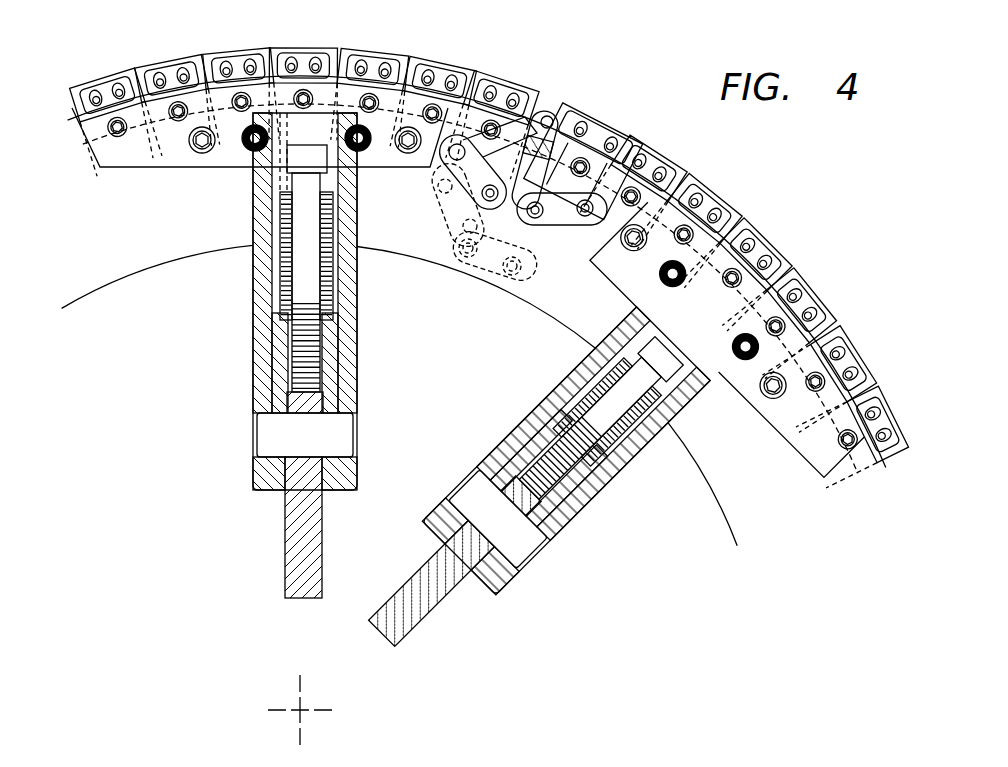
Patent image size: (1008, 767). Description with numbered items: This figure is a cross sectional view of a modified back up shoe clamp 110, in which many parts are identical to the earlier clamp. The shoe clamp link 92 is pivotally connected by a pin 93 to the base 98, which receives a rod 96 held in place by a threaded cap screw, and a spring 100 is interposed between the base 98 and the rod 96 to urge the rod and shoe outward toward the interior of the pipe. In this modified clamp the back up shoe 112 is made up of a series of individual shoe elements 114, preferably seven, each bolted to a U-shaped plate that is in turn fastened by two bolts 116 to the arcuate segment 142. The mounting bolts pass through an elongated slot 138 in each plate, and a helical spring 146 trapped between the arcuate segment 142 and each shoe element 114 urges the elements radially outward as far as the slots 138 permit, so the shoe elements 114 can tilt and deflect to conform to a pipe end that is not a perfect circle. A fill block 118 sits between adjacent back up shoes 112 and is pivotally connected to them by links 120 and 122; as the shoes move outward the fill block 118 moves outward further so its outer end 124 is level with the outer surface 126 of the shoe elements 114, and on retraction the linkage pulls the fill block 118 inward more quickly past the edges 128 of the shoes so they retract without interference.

The shoe clamp link 92 is at (428, 592).
The pin 93 is at (522, 548).
The rod 96 is at (692, 390).
The base 98 is at (570, 508).
The spring 100 is at (630, 430).
The modified back up shoe clamp 110 is at (206, 334).
The back up shoe 112 is at (166, 160).
The shoe element 114 is at (103, 86).
The bolt 116 is at (120, 142).
The fill block 118 is at (556, 106).
The link 120 is at (456, 170).
The link 122 is at (576, 236).
The outer end 124 is at (574, 108).
The outer surface 126 is at (512, 82).
The edge 128 is at (520, 100).
The elongated slot 138 is at (375, 70).
The arcuate segment 142 is at (798, 446).
The helical spring 146 is at (309, 62).